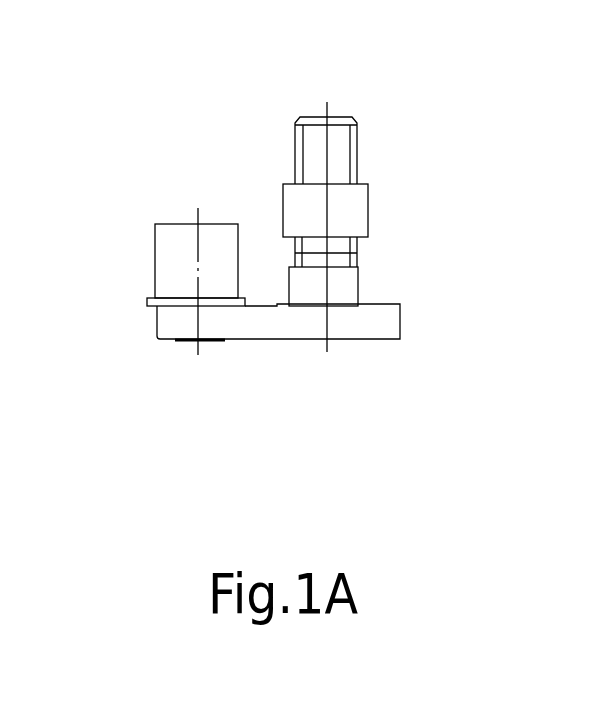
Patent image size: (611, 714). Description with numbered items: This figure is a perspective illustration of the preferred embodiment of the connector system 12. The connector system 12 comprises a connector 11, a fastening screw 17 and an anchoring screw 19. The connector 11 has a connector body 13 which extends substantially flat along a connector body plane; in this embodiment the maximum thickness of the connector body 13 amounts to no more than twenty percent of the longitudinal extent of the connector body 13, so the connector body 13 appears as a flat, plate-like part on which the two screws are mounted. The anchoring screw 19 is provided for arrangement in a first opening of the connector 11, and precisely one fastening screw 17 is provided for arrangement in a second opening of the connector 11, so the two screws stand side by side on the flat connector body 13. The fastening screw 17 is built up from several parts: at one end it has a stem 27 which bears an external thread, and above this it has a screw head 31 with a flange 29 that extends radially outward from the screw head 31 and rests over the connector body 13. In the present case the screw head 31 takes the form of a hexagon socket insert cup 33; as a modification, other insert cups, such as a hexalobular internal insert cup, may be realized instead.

The connector system 12 is at (446, 108).
The connector 11 is at (388, 325).
The connector body 13 is at (293, 331).
The fastening screw 17 is at (152, 257).
The anchoring screw 19 is at (355, 250).
The stem 27 is at (197, 341).
The flange 29 is at (247, 297).
The screw head 31 is at (155, 222).
The hexagon socket insert cup 33 is at (186, 220).